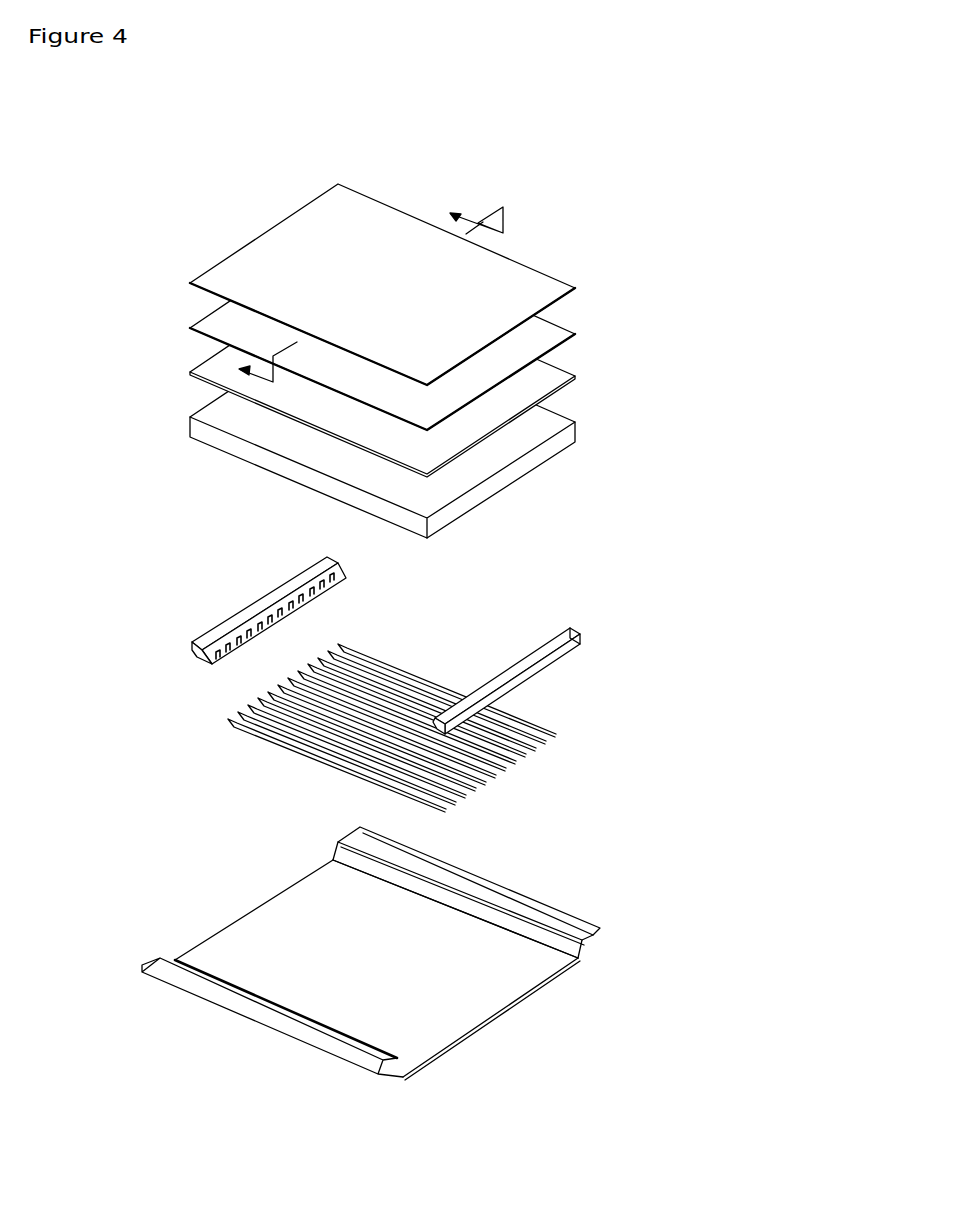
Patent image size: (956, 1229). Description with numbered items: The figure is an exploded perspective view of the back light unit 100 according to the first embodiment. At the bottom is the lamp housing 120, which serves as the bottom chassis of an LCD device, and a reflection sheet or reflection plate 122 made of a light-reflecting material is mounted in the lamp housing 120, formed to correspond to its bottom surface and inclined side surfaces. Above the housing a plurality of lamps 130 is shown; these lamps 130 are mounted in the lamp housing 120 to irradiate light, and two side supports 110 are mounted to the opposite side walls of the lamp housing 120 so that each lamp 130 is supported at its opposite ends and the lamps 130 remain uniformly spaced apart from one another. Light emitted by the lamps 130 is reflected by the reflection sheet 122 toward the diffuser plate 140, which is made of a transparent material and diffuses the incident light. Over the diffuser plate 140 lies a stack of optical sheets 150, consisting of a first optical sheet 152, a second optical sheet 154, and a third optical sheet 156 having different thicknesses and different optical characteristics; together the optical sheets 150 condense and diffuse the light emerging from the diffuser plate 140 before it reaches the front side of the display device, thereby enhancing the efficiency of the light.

The back light unit 100 is at (614, 150).
The side supports 110 is at (248, 608).
The lamp housing 120 is at (401, 953).
The reflection sheet 122 is at (510, 940).
The lamps 130 is at (533, 724).
The diffuser plate 140 is at (566, 423).
The optical sheets 150 is at (454, 330).
The first optical sheet 152 is at (566, 377).
The second optical sheet 154 is at (566, 330).
The third optical sheet 156 is at (667, 367).